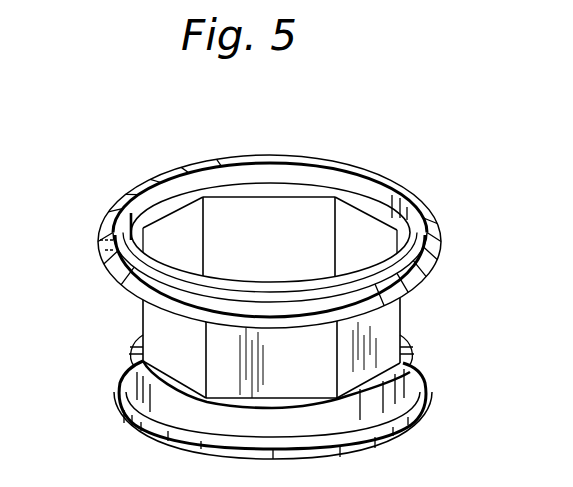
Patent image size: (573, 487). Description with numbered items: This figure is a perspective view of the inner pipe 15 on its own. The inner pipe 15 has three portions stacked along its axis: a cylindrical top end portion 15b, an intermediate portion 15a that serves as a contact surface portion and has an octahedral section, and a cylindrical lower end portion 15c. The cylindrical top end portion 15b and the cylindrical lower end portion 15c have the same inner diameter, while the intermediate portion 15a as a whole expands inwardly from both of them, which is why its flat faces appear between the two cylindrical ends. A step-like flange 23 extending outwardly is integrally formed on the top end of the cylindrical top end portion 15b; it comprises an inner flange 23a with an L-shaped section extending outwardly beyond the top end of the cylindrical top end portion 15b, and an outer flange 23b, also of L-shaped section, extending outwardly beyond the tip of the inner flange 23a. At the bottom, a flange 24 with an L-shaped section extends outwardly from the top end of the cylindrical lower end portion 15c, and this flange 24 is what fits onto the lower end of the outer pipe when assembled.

The inner pipe 15 is at (410, 186).
The intermediate portion 15a is at (378, 231).
The cylindrical top end portion 15b is at (339, 178).
The cylindrical lower end portion 15c is at (393, 387).
The step-like flange 23 is at (132, 204).
The inner flange 23a is at (120, 237).
The outer flange 23b is at (115, 265).
The flange 24 is at (408, 421).